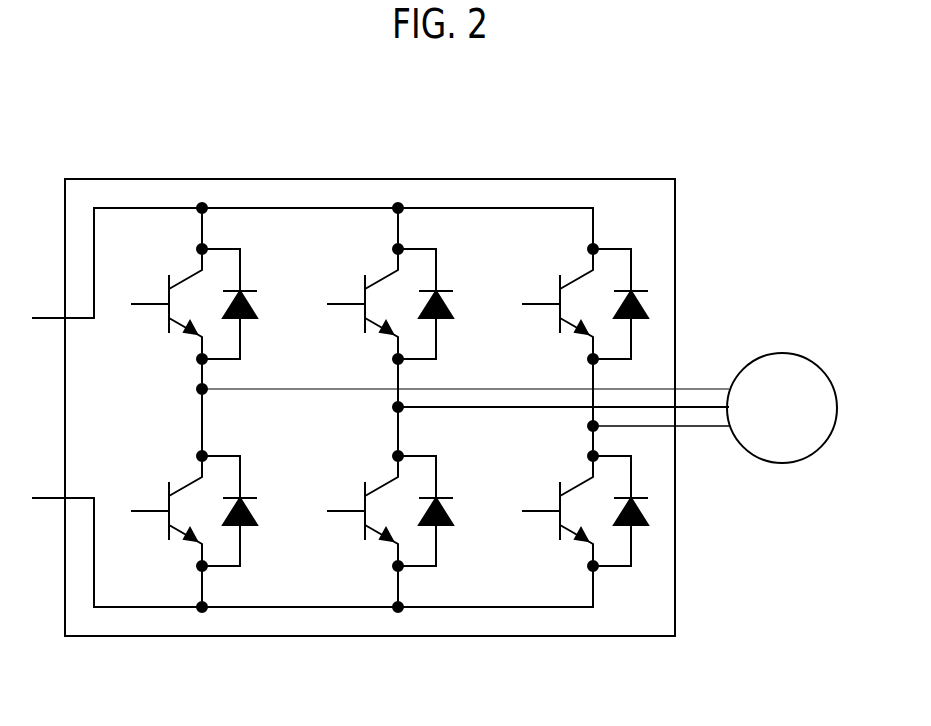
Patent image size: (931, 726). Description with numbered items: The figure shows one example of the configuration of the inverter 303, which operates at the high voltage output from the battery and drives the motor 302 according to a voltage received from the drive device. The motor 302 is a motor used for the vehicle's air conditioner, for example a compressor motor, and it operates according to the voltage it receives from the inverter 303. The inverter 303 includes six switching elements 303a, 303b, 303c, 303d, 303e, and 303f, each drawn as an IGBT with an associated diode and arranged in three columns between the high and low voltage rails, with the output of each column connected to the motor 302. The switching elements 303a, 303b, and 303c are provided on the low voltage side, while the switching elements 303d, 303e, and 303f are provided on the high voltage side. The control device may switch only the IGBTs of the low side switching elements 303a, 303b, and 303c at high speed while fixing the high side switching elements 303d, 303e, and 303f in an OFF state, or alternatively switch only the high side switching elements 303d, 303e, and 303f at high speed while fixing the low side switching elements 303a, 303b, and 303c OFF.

The motor 302 is at (777, 353).
The inverter 303 is at (563, 179).
The switching element 303a is at (190, 487).
The switching element 303b is at (386, 487).
The switching element 303c is at (582, 487).
The switching element 303d is at (190, 280).
The switching element 303e is at (386, 280).
The switching element 303f is at (582, 280).